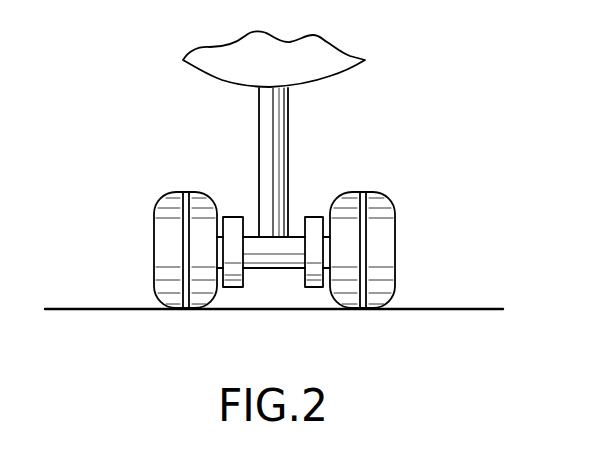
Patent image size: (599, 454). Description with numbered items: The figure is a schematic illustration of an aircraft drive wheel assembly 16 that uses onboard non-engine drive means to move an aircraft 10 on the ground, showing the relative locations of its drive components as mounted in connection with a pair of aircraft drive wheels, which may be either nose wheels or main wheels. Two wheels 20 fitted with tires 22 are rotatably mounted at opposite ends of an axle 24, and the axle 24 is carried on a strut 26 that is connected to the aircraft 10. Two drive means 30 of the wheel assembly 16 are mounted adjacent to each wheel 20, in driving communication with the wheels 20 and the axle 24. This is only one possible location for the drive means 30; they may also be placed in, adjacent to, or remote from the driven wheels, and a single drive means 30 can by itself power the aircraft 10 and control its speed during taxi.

The aircraft 10 is at (262, 76).
The drive wheel assembly 16 is at (230, 227).
The wheel 20 is at (269, 248).
The tire 22 is at (167, 273).
The axle 24 is at (270, 245).
The strut 26 is at (277, 147).
The drive means 30 is at (233, 281).